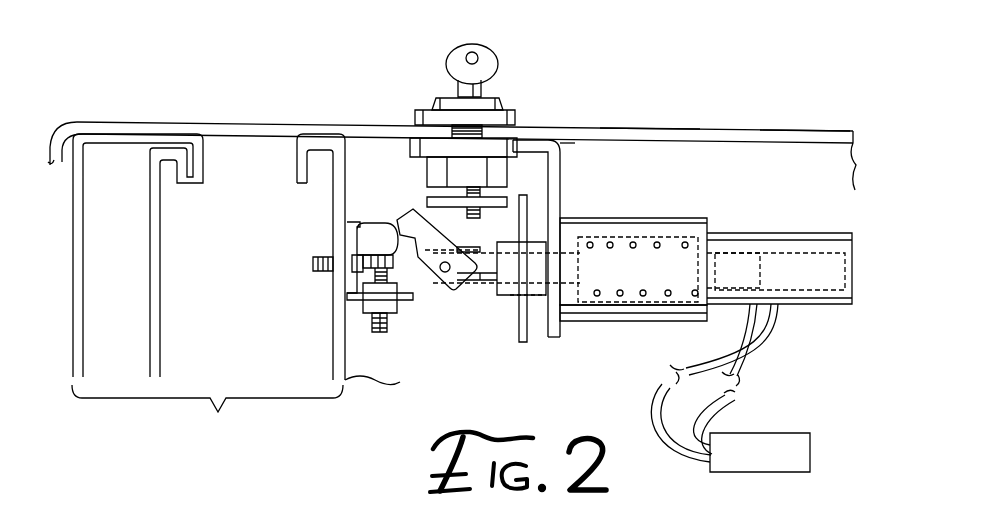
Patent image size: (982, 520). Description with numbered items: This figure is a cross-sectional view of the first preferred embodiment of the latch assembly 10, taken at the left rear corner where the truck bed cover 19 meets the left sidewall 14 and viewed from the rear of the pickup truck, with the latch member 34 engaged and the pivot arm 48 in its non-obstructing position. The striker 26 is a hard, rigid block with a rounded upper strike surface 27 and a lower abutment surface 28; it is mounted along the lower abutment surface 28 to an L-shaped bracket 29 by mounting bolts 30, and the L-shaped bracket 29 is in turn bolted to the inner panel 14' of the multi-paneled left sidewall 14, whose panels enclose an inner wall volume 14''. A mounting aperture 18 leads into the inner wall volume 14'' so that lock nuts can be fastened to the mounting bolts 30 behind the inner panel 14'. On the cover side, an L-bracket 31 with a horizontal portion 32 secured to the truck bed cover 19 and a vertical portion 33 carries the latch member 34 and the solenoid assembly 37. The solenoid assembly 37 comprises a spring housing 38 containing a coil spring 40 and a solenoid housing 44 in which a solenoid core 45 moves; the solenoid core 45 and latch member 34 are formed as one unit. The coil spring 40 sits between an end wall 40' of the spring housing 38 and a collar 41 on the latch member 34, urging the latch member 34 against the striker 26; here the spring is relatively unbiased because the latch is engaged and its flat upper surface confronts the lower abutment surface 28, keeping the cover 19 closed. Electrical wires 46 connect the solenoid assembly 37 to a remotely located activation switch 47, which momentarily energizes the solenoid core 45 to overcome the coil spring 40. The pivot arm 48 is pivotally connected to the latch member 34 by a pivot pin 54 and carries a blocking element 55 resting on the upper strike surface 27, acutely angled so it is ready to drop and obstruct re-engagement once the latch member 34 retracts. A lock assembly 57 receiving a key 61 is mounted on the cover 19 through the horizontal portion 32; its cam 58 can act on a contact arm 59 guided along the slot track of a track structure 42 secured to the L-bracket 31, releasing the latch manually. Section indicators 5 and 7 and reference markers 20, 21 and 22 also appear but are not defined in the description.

The section line 5 is at (525, 188).
The section line 7 is at (408, 200).
The latch assembly 10 is at (592, 75).
The left sidewall 14 is at (207, 414).
The inner panel 14' is at (339, 364).
The inner wall volume 14'' is at (240, 311).
The mounting aperture 18 is at (230, 178).
The truck bed cover 19 is at (801, 129).
The rail plate 20 is at (750, 143).
The rail surface 21 is at (638, 128).
The hook end 22 is at (58, 112).
The striker block 26 is at (370, 240).
The upper strike surface 27 is at (352, 221).
The lower abutment surface 28 is at (385, 272).
The L-shaped bracket 29 is at (404, 300).
The mounting bolts 30 is at (313, 264).
The L-bracket 31 is at (575, 150).
The horizontal portion 32 is at (523, 143).
The vertical portion 33 is at (561, 330).
The latch member 34 is at (479, 283).
The solenoid assembly 37 is at (724, 221).
The spring housing 38 is at (630, 322).
The coil spring 40 is at (647, 214).
The end wall 40' is at (729, 231).
The collar 41 is at (596, 257).
The track structure 42 is at (516, 310).
The solenoid housing 44 is at (841, 306).
The solenoid core 45 is at (753, 310).
The electrical wires 46 is at (753, 347).
The activation switch 47 is at (748, 433).
The pivot arm 48 is at (448, 231).
The pivot pin 54 is at (443, 281).
The blocking element 55 is at (400, 223).
The lock assembly 57 is at (432, 99).
The cam 58 is at (430, 196).
The contact arm 59 is at (515, 350).
The key 61 is at (451, 56).